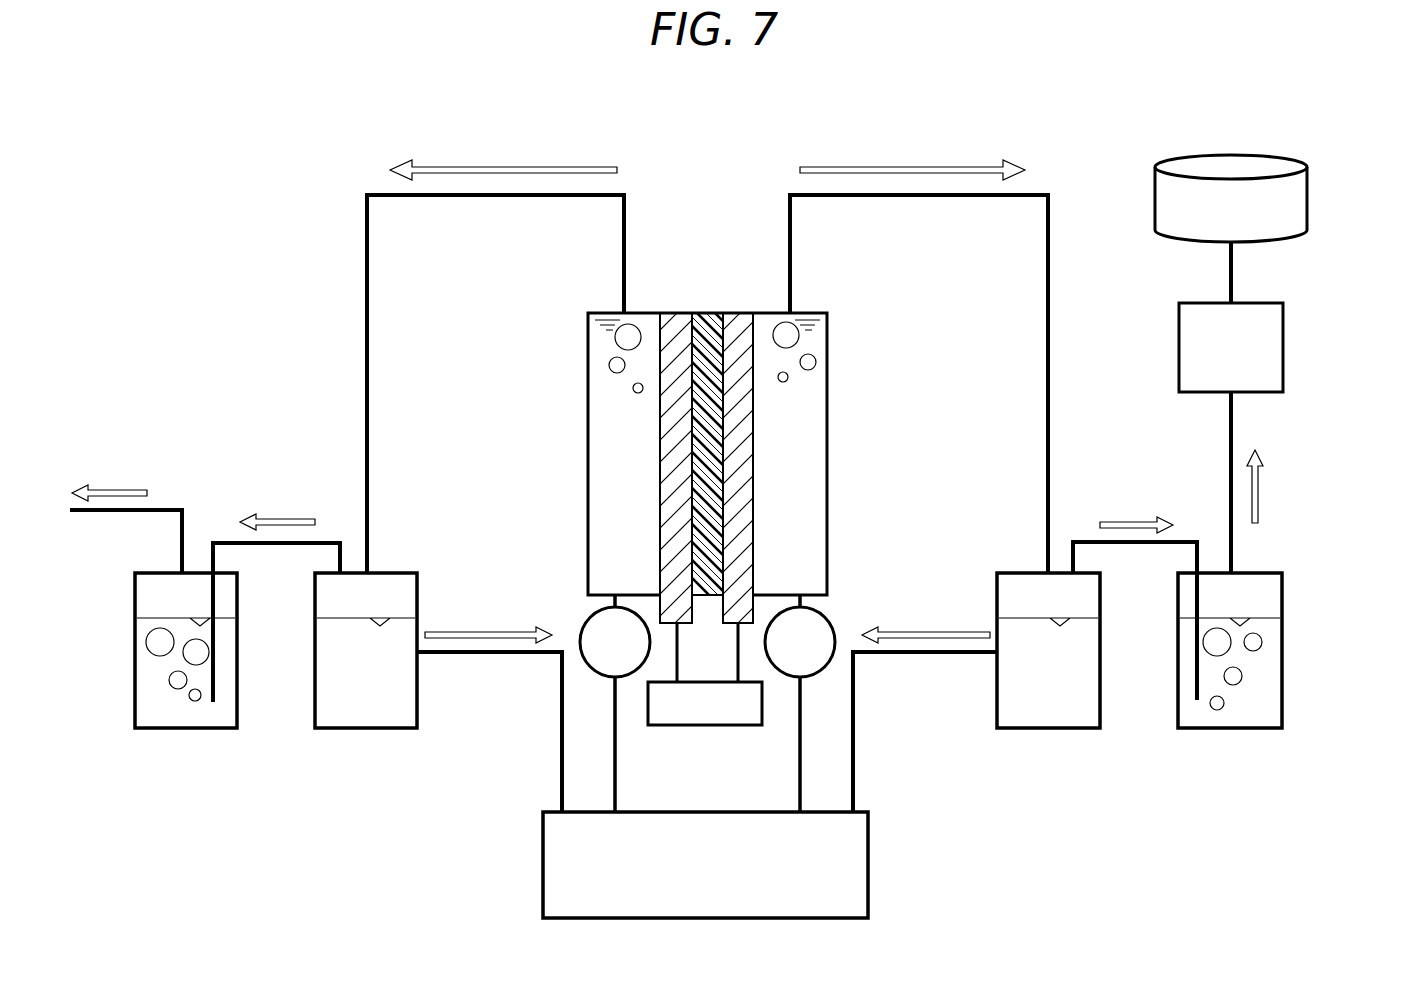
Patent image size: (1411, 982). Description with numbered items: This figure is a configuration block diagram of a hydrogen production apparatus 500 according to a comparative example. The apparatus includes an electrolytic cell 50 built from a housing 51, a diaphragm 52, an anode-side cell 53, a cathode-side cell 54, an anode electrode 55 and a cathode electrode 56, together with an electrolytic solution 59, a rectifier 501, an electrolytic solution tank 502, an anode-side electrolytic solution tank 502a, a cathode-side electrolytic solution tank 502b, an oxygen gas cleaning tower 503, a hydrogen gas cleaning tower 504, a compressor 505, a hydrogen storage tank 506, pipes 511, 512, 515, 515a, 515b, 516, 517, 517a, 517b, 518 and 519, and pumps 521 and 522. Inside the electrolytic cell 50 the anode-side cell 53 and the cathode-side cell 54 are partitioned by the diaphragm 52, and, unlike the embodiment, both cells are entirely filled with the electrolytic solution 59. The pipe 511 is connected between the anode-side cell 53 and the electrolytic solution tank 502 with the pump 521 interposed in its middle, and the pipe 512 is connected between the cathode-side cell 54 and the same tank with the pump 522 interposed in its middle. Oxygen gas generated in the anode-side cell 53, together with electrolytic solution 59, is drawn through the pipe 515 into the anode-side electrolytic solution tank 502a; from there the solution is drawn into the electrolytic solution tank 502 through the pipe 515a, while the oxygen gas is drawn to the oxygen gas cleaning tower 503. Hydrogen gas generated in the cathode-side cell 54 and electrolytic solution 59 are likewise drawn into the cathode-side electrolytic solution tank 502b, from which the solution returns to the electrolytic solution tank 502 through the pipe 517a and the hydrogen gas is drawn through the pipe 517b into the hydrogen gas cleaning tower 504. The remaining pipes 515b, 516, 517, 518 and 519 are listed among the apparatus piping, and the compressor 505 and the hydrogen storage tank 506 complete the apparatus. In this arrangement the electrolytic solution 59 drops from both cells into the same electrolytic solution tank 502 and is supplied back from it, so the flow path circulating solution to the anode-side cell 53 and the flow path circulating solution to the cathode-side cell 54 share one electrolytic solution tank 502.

The hydrogen production apparatus 500 is at (1262, 85).
The electrolytic cell 50 is at (822, 293).
The housing 51 is at (827, 360).
The diaphragm 52 is at (705, 322).
The anode-side cell 53 is at (592, 410).
The cathode-side cell 54 is at (822, 412).
The anode electrode 55 is at (677, 322).
The cathode electrode 56 is at (737, 322).
The electrolytic solution 59 is at (592, 497).
The rectifier 501 is at (705, 727).
The electrolytic solution tank 502 is at (870, 830).
The anode-side electrolytic solution tank 502a is at (338, 730).
The cathode-side electrolytic solution tank 502b is at (1075, 730).
The oxygen gas cleaning tower 503 is at (165, 730).
The hydrogen gas cleaning tower 504 is at (1265, 730).
The compressor 505 is at (1285, 348).
The hydrogen storage tank 506 is at (1308, 205).
The pipe 511 is at (618, 787).
The pipe 512 is at (798, 788).
The pipe 515 is at (365, 330).
The pipe 515a is at (560, 736).
The pipe 515b is at (277, 548).
The pipe 516 is at (96, 515).
The pipe 517 is at (1052, 347).
The pipe 517a is at (857, 718).
The pipe 517b is at (1140, 548).
The pipe 518 is at (1228, 432).
The pipe 519 is at (1228, 270).
The pump 521 is at (590, 603).
The pump 522 is at (828, 608).